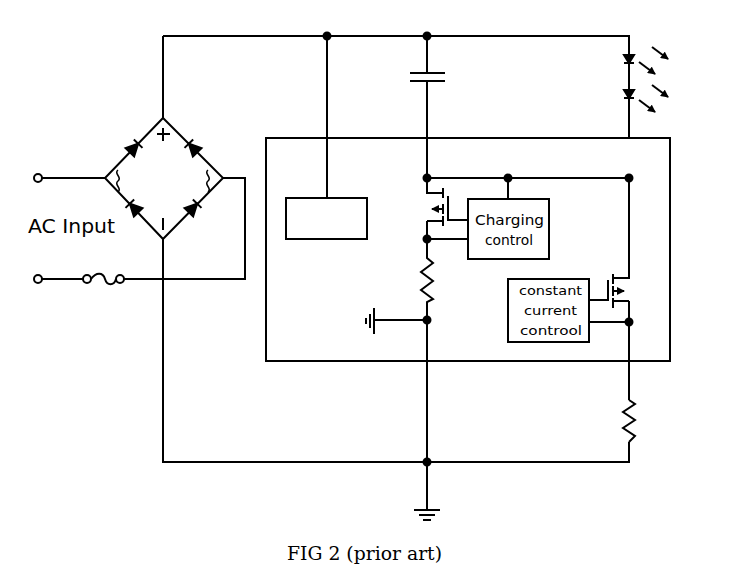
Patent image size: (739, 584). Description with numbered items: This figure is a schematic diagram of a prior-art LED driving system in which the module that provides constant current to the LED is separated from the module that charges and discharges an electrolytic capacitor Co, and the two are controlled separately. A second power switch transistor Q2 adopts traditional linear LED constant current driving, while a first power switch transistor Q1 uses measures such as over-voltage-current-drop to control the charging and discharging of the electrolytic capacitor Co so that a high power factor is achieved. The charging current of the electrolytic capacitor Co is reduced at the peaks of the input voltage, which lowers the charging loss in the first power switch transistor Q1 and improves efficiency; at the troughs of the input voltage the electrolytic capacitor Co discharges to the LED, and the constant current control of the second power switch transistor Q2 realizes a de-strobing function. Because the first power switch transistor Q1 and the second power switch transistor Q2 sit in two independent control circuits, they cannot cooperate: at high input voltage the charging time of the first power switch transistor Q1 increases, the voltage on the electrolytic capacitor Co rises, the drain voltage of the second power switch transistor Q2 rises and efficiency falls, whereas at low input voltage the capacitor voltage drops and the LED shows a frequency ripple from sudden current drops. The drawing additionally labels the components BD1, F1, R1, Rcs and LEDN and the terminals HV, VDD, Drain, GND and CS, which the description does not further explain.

The bridge rectifier diode BD1 is at (164, 178).
The fuse F1 is at (103, 297).
The electrolytic capacitor Co is at (446, 107).
The first power switch transistor Q1 is at (427, 208).
The second power switch transistor Q2 is at (627, 250).
The resistor R1 is at (448, 279).
The current sense resistor Rcs is at (657, 421).
The LED string LEDN is at (664, 92).
The high voltage pin HV is at (306, 117).
The supply voltage block VDD is at (326, 218).
The drain pin Drain is at (528, 147).
The ground pin GND is at (461, 391).
The current sense pin CS is at (652, 361).